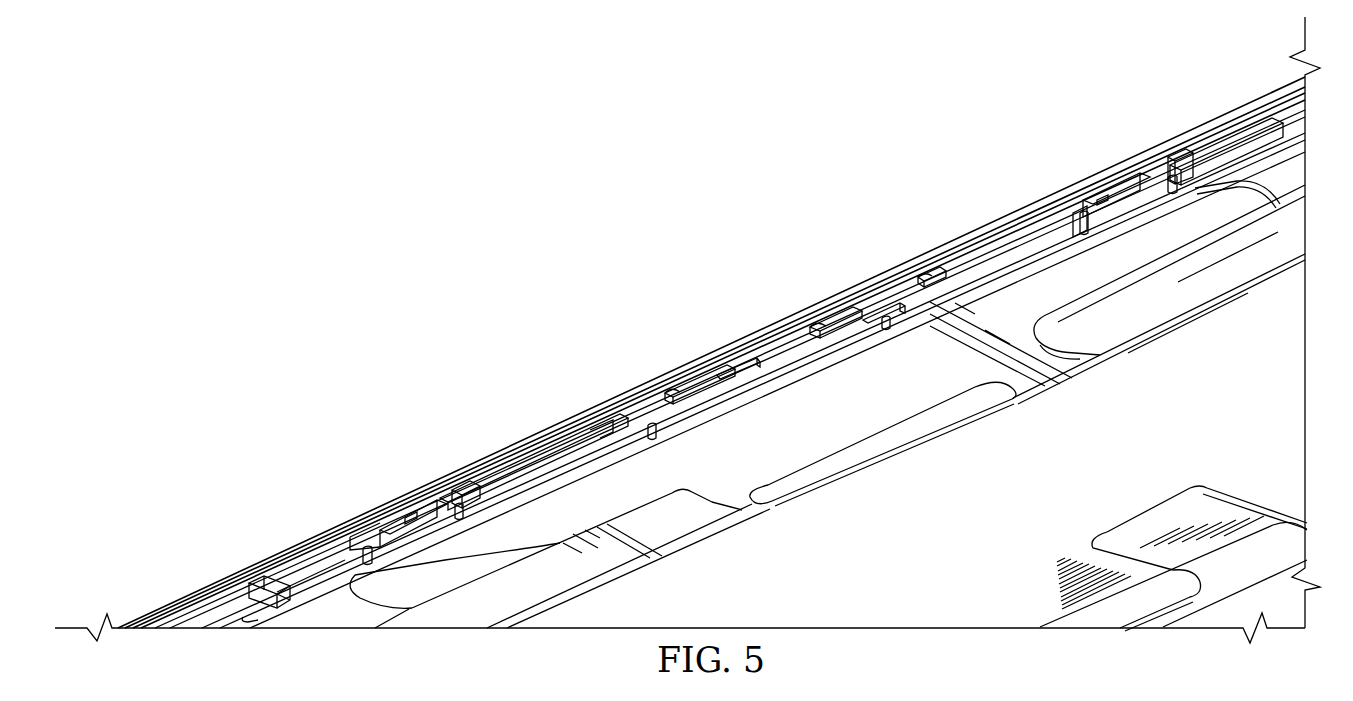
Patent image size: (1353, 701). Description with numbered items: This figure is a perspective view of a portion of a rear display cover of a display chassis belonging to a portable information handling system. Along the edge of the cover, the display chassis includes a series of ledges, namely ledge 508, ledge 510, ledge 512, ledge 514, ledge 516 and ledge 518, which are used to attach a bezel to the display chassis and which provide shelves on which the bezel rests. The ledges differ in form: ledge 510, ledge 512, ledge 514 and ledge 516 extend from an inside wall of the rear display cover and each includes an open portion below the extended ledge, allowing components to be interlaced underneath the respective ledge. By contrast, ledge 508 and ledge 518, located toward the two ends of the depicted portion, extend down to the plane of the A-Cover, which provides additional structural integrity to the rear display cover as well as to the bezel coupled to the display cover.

The ledge 508 is at (297, 572).
The ledge 510 is at (528, 452).
The ledge 512 is at (697, 383).
The ledge 514 is at (840, 318).
The ledge 516 is at (958, 263).
The ledge 518 is at (1205, 150).